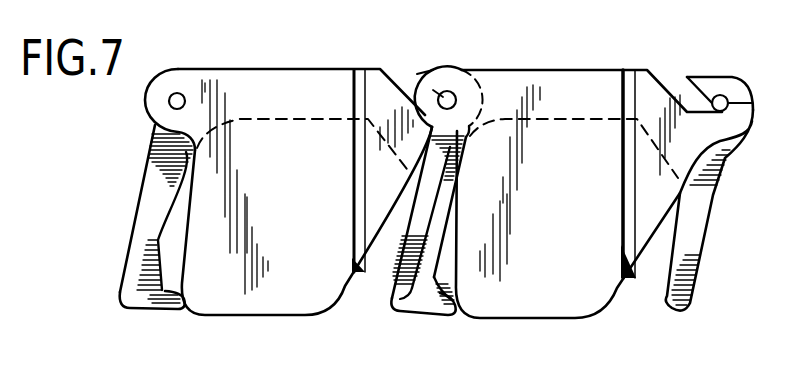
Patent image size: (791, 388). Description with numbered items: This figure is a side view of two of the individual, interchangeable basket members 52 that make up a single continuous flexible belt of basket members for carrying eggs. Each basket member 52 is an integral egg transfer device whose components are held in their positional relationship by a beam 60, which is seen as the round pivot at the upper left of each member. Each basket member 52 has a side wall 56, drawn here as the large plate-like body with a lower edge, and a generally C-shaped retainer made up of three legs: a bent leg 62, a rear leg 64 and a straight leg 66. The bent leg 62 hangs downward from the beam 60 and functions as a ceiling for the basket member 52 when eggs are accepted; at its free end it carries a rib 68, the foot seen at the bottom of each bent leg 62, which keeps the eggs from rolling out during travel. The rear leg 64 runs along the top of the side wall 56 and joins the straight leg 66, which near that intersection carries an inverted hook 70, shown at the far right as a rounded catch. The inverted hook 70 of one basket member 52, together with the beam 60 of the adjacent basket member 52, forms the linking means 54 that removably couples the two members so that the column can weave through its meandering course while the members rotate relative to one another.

The basket member 52 is at (201, 320).
The linking means 54 is at (455, 64).
The side wall 56 is at (290, 281).
The beam 60 is at (181, 95).
The bent leg 62 is at (137, 228).
The rear leg 64 is at (283, 93).
The straight leg 66 is at (700, 240).
The rib 68 is at (127, 307).
The inverted hook 70 is at (723, 75).